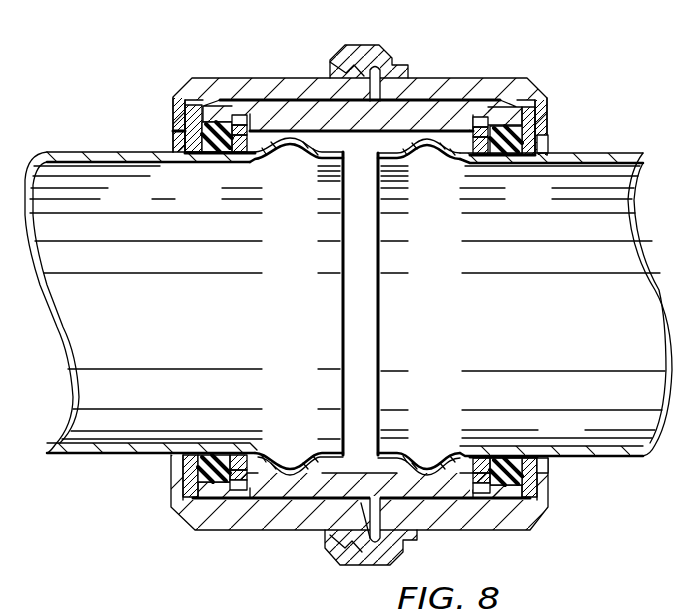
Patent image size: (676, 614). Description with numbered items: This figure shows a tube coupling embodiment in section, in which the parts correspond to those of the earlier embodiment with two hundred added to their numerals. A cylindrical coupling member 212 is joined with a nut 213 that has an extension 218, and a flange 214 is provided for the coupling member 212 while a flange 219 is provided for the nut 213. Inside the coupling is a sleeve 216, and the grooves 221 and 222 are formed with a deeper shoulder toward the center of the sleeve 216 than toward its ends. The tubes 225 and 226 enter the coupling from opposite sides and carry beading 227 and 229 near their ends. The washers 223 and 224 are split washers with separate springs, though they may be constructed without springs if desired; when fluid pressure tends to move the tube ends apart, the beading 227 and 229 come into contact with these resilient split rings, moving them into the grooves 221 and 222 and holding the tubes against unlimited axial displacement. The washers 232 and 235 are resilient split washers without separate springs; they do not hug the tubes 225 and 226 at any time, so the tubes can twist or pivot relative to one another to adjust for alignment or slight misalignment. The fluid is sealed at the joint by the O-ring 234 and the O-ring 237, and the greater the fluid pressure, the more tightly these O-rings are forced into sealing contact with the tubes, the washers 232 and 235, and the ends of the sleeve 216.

The cylindrical coupling member 212 is at (288, 88).
The nut 213 is at (391, 60).
The flange 214 is at (180, 100).
The sleeve 216 is at (307, 114).
The extension 218 is at (423, 85).
The flange 219 is at (548, 110).
The groove 221 is at (242, 114).
The groove 222 is at (480, 116).
The split washer 223 is at (253, 148).
The split washer 224 is at (470, 148).
The tube 225 is at (184, 306).
The tube 226 is at (525, 307).
The beading 227 is at (303, 425).
The beading 229 is at (447, 425).
The resilient split washer 232 is at (187, 124).
The O-ring 234 is at (230, 153).
The resilient split washer 235 is at (550, 147).
The O-ring 237 is at (512, 153).